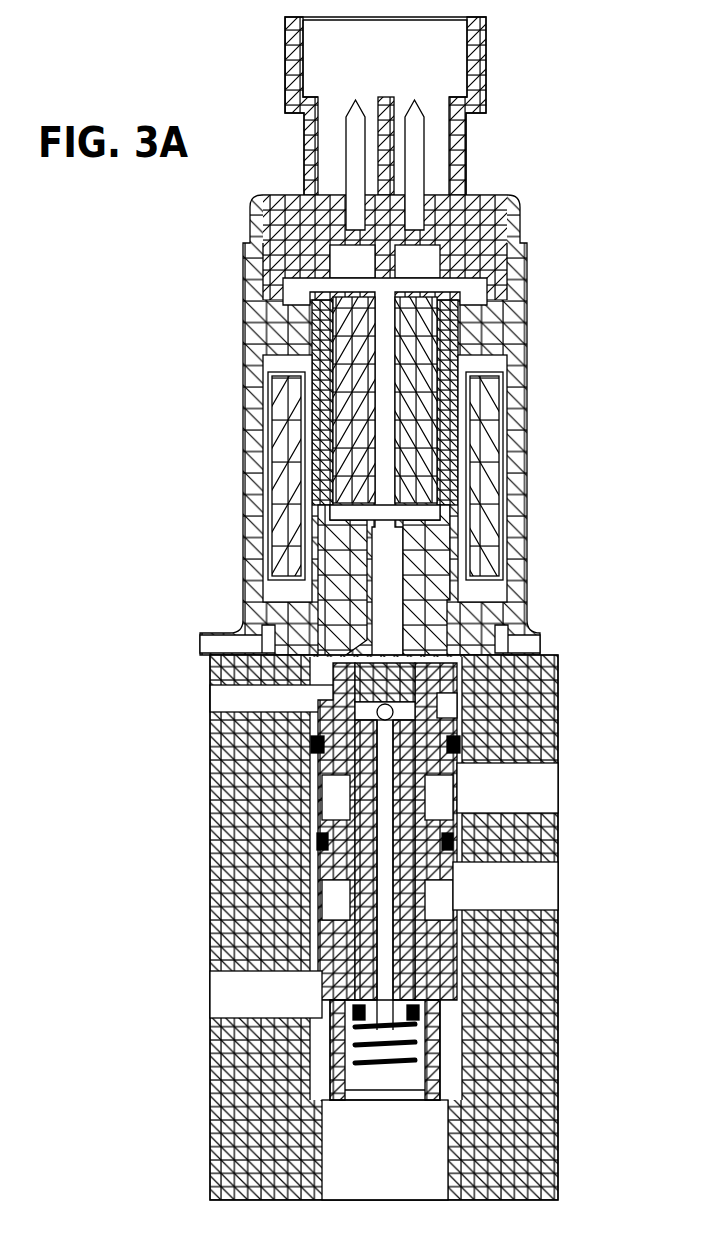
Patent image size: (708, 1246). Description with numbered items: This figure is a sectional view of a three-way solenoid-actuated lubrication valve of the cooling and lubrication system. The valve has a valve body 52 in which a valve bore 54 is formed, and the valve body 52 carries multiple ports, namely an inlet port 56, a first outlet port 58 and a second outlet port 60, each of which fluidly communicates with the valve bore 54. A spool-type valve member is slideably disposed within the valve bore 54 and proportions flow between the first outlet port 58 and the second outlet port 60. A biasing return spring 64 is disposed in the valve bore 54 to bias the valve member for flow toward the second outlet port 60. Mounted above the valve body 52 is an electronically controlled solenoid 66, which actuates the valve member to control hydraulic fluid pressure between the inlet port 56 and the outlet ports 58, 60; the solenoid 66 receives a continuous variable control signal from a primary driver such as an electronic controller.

The electronically controlled solenoid 66 is at (548, 491).
The valve body 52 is at (460, 745).
The valve bore 54 is at (350, 748).
The inlet port 56 is at (432, 893).
The first outlet port 58 is at (437, 797).
The second outlet port 60 is at (335, 983).
The biasing return spring 64 is at (417, 1027).